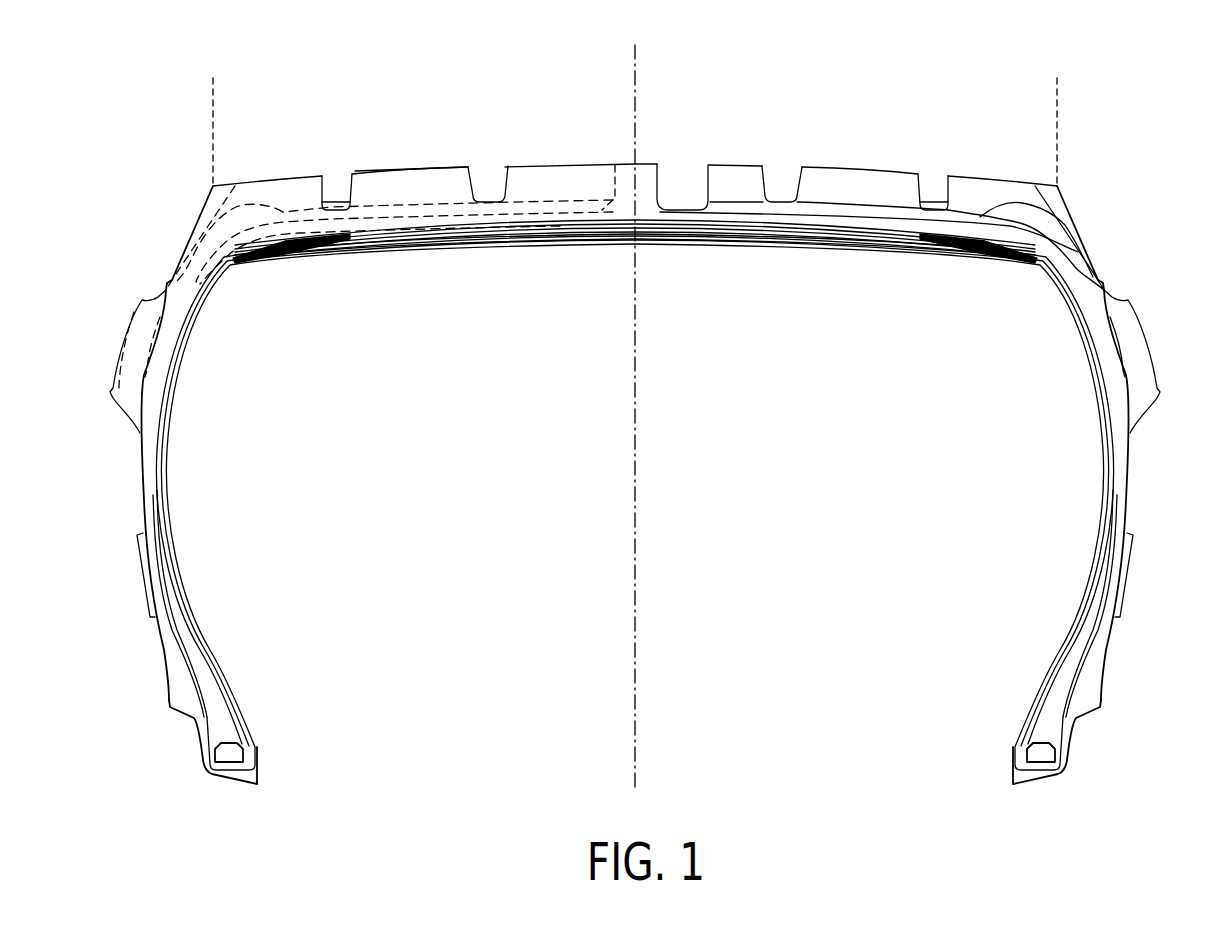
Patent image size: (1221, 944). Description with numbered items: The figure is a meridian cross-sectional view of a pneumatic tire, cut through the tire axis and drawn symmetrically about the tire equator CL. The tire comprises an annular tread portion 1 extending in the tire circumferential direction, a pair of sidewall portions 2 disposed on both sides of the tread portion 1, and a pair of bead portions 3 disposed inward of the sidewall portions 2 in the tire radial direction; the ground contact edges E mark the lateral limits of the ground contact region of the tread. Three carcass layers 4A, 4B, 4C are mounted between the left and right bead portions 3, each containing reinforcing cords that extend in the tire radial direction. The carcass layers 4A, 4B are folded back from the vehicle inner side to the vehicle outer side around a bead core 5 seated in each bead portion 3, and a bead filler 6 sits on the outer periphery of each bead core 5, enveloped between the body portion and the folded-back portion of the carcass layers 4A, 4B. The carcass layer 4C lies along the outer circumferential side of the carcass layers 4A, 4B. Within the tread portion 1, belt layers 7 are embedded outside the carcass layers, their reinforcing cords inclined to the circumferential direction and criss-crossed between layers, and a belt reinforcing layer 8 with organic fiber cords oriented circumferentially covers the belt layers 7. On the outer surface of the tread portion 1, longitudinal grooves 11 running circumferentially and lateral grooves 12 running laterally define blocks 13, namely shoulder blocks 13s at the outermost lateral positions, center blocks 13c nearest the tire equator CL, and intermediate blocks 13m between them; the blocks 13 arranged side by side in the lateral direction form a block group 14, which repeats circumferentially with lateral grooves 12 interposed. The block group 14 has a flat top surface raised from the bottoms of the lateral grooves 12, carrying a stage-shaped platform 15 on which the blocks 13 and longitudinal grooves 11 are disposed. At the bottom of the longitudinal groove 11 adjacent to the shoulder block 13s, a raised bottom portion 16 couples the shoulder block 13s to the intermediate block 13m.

The tread portion 1 is at (653, 124).
The sidewall portion 2 is at (1147, 468).
The bead portion 3 is at (1087, 758).
The carcass layer 4A is at (1100, 414).
The carcass layer 4B is at (1106, 455).
The carcass layer 4C is at (1110, 494).
The bead core 5 is at (1036, 757).
The bead filler 6 is at (1044, 716).
The belt layer 7 is at (816, 246).
The belt reinforcing layer 8 is at (988, 256).
The longitudinal groove 11 is at (349, 186).
The lateral groove 12 is at (566, 198).
The block 13 is at (635, 138).
The shoulder block 13s is at (258, 183).
The intermediate block 13m is at (419, 168).
The center block 13c is at (541, 166).
The block group 14 is at (222, 90).
The platform 15 is at (206, 212).
The raised bottom portion 16 is at (333, 196).
The ground contact edge E is at (636, 117).
The tire equator CL is at (635, 403).